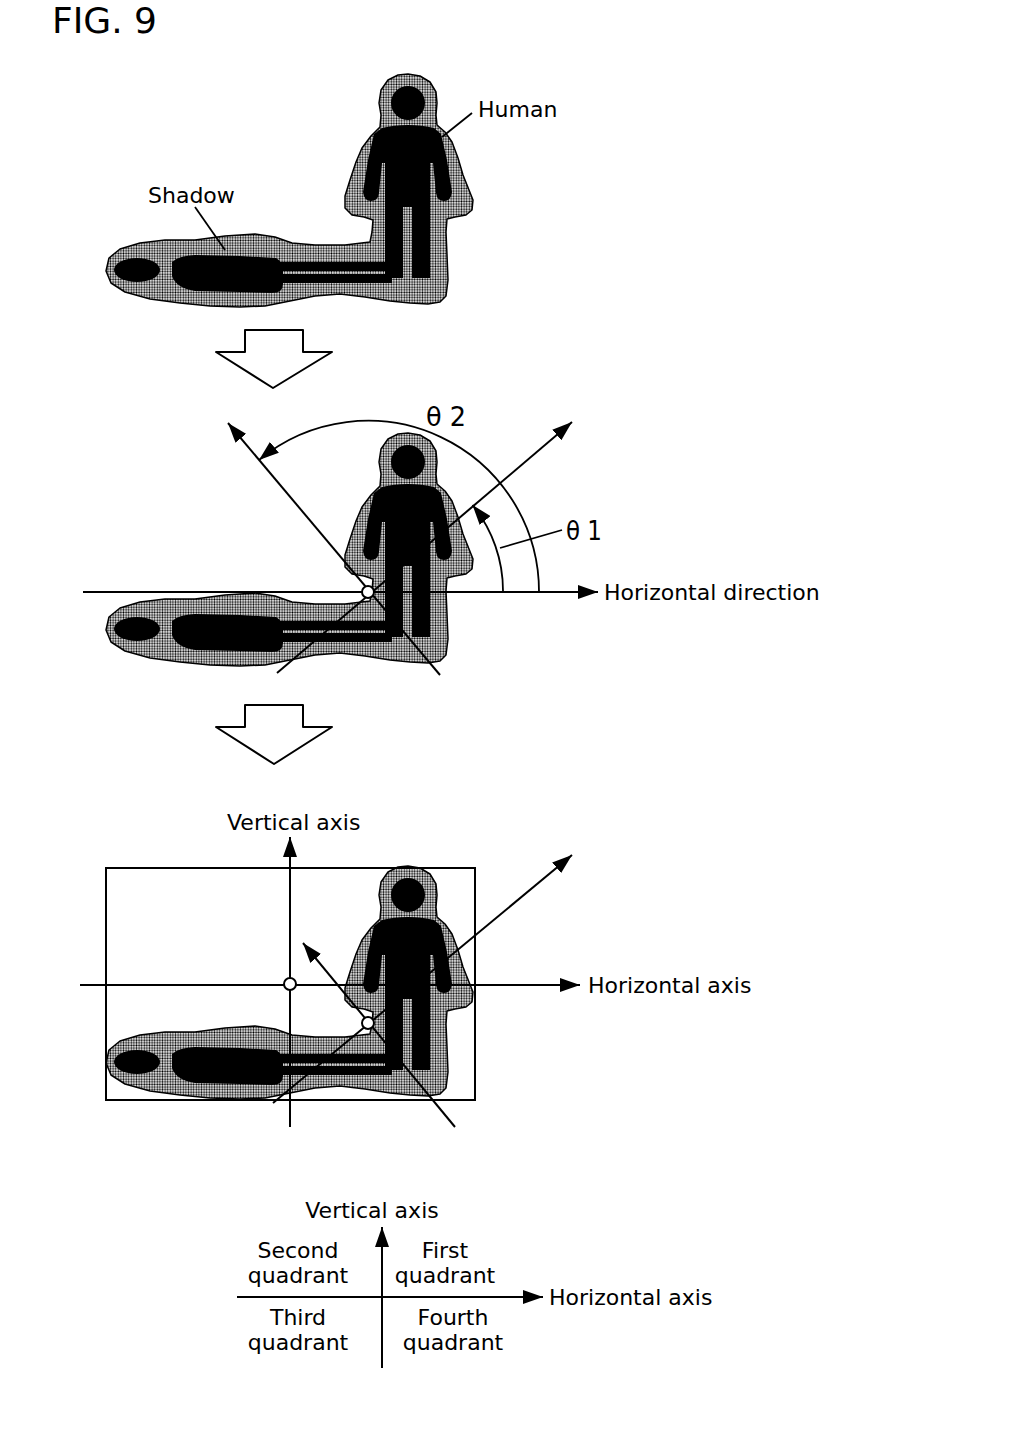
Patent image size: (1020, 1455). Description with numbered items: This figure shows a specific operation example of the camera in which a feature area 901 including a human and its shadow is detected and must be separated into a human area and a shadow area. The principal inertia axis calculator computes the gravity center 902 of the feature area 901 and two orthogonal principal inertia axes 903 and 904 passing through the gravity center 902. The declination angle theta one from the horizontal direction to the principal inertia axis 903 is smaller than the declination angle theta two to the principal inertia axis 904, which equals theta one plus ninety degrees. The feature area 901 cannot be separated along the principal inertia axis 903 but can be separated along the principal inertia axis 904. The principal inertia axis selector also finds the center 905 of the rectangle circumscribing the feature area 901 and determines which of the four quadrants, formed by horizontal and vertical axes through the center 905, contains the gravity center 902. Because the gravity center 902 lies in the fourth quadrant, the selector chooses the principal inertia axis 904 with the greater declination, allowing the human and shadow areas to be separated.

The feature area 901 is at (473, 187).
The gravity center 902 is at (362, 588).
The principal inertia axis 903 is at (540, 452).
The principal inertia axis 904 is at (277, 480).
The center of the rectangle circumscribing the feature area 905 is at (284, 980).